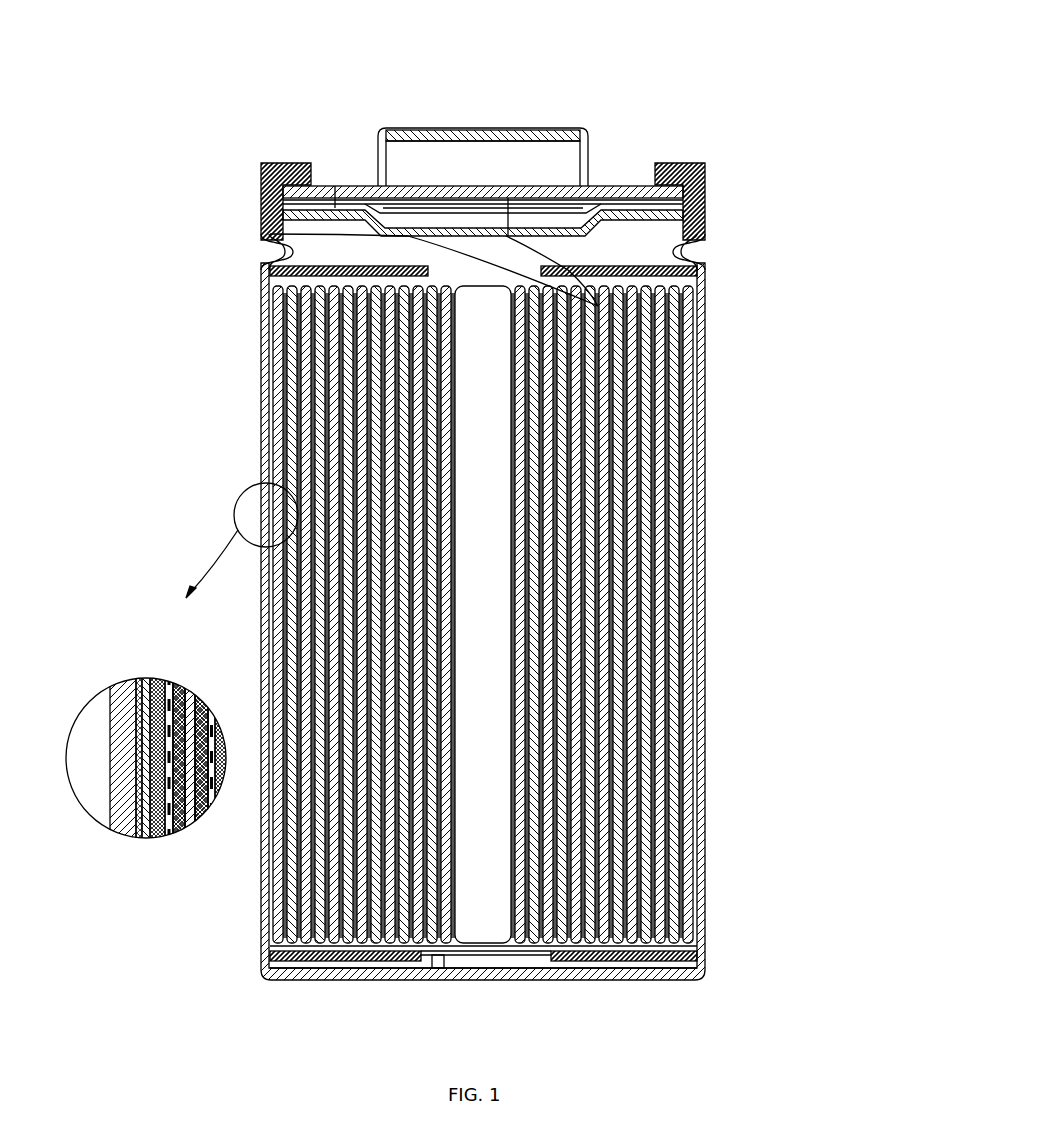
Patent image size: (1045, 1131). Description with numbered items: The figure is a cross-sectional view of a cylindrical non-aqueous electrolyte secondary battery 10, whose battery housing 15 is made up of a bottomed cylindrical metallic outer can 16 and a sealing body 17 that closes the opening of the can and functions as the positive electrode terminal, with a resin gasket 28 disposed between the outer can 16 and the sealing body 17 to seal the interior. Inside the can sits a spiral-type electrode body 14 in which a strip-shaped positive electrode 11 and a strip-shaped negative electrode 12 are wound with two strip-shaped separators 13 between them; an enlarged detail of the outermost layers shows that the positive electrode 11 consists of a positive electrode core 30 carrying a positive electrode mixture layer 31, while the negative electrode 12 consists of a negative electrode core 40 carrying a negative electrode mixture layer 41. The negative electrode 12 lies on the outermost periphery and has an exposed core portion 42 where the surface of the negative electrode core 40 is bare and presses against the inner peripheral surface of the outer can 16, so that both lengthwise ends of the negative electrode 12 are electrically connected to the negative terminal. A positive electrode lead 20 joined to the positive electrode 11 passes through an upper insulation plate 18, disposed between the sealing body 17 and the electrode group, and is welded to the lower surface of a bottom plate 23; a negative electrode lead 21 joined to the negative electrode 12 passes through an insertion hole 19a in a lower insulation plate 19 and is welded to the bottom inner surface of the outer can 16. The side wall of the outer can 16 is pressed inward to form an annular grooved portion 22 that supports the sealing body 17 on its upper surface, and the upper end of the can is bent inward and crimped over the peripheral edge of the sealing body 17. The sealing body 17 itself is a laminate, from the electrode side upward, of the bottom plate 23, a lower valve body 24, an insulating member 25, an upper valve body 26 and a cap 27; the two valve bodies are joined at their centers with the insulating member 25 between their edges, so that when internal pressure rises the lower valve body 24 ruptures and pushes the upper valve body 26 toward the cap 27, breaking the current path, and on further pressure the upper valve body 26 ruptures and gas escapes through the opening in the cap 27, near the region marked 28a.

The non-aqueous electrolyte secondary battery 10 is at (680, 14).
The positive electrode 11 is at (700, 670).
The negative electrode 12 is at (700, 695).
The separator 13 is at (778, 658).
The electrode body 14 is at (476, 614).
The battery housing 15 is at (600, 75).
The outer can 16 is at (670, 156).
The sealing body 17 is at (533, 141).
The upper insulation plate 18 is at (700, 268).
The lower insulation plate 19 is at (529, 993).
The insertion hole 19a is at (415, 978).
The positive electrode lead 20 is at (262, 226).
The negative electrode lead 21 is at (466, 976).
The grooved portion 22 is at (258, 242).
The bottom plate 23 is at (466, 222).
The lower valve body 24 is at (380, 196).
The insulating member 25 is at (327, 178).
The upper valve body 26 is at (404, 192).
The cap 27 is at (536, 124).
The gasket 28 is at (700, 181).
The opening of gasket 28a is at (512, 190).
The positive electrode core 30 is at (183, 680).
The positive electrode mixture layer 31 is at (170, 672).
The negative electrode core 40 is at (138, 672).
The negative electrode mixture layer 41 is at (146, 714).
The exposed core portion 42 is at (130, 675).